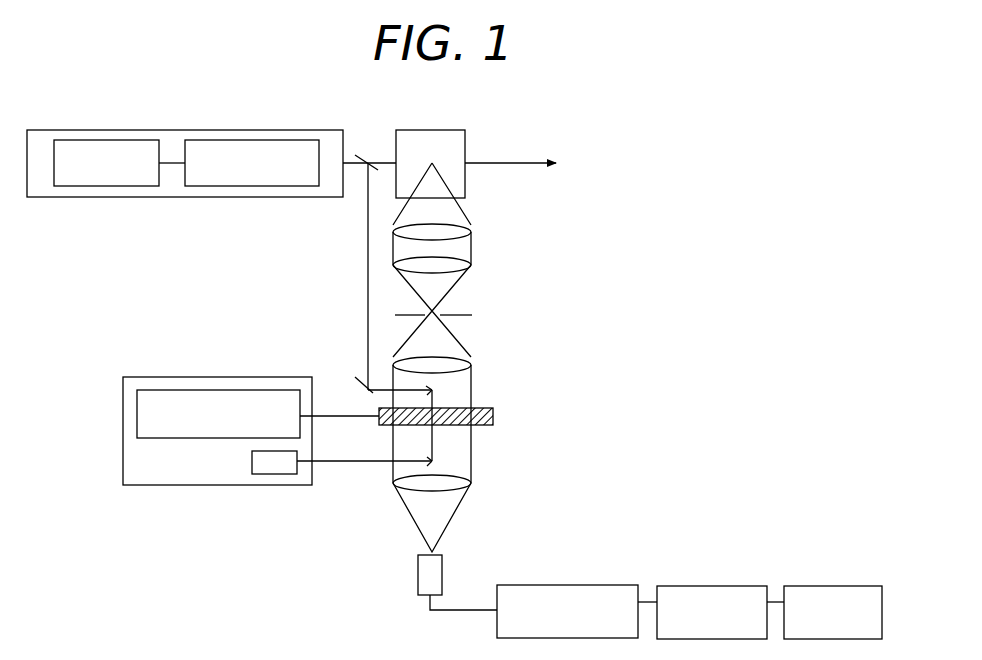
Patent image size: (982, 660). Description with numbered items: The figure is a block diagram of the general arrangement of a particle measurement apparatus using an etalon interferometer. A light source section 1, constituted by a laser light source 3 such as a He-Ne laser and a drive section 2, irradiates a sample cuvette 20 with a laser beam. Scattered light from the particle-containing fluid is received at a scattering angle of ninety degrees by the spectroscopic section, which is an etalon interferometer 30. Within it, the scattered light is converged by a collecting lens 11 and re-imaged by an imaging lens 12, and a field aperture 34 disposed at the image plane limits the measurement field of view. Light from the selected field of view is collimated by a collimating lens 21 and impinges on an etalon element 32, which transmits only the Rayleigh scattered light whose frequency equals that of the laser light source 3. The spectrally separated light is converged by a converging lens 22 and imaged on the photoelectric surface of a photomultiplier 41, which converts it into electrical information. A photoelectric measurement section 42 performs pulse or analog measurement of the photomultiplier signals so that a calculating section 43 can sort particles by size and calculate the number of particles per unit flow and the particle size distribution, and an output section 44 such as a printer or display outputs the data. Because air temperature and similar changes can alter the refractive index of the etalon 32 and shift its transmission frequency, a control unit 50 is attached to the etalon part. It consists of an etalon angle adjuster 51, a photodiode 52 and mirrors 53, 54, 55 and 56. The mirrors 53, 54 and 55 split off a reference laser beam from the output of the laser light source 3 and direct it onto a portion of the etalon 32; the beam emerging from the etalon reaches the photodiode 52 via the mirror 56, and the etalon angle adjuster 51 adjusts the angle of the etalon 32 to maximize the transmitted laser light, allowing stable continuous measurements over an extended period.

The light source section 1 is at (57, 130).
The drive section 2 is at (68, 186).
The laser light source 3 is at (247, 140).
The collecting lens 11 is at (468, 226).
The imaging lens 12 is at (470, 262).
The sample cuvette 20 is at (418, 130).
The collimating lens 21 is at (470, 357).
The converging lens 22 is at (468, 467).
The etalon interferometer 30 is at (514, 357).
The etalon element 32 is at (491, 410).
The field aperture 34 is at (458, 315).
The photomultiplier 41 is at (418, 587).
The photoelectric measurement section 42 is at (568, 585).
The calculating section 43 is at (713, 586).
The output section 44 is at (838, 586).
The control unit 50 is at (148, 377).
The etalon angle adjuster 51 is at (137, 408).
The photodiode 52 is at (283, 474).
The mirror 53 is at (368, 155).
The mirror 54 is at (357, 384).
The mirror 55 is at (434, 390).
The mirror 56 is at (433, 462).